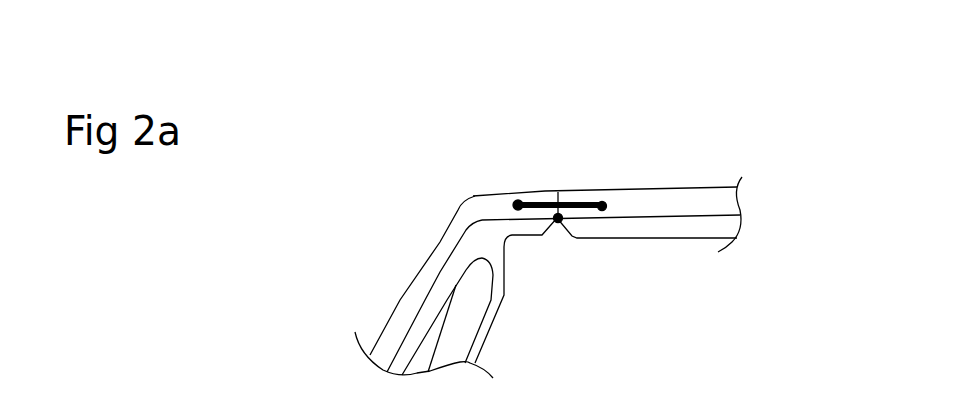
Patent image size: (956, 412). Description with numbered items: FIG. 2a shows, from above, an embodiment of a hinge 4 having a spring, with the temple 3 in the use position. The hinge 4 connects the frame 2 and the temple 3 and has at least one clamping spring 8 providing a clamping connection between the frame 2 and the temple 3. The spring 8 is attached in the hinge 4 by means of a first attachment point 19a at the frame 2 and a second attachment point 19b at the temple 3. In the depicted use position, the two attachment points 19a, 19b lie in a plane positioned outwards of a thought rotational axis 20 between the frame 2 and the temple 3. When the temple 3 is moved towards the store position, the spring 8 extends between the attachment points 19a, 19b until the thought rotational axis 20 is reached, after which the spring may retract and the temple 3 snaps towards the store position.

The frame 2 is at (433, 258).
The temple 3 is at (668, 200).
The hinge 4 is at (560, 182).
The clamping spring 8 is at (540, 200).
The first attachment point 19a is at (517, 205).
The second attachment point 19b is at (605, 208).
The thought rotational axis 20 is at (557, 222).